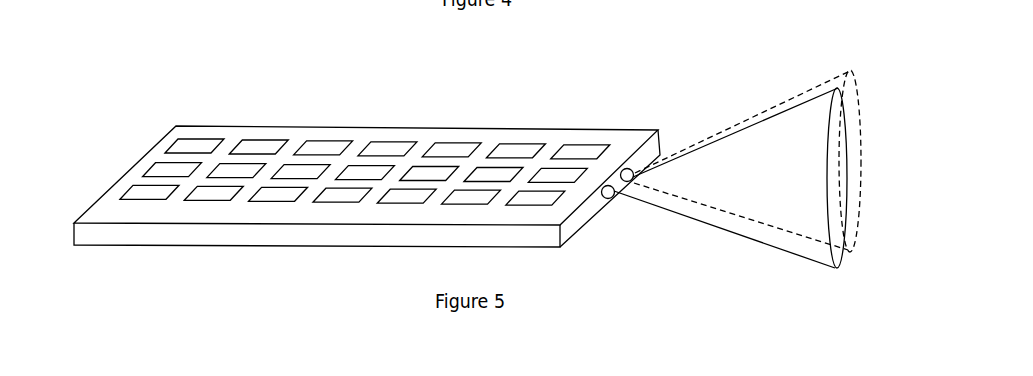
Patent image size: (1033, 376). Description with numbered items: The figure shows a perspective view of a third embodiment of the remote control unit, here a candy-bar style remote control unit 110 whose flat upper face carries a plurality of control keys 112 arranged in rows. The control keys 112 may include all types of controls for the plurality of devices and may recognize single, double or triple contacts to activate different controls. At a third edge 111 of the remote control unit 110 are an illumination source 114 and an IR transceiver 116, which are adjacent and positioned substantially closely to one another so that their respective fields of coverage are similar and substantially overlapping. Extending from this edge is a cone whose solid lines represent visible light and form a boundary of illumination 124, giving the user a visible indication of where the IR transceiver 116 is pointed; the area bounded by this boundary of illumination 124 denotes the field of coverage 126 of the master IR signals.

The remote control unit 110 is at (348, 88).
The third edge 111 is at (567, 234).
The control keys 112 is at (200, 148).
The illumination source 114 is at (610, 196).
The IR transceiver 116 is at (631, 169).
The boundary of illumination 124 is at (838, 258).
The field of coverage 126 is at (854, 100).